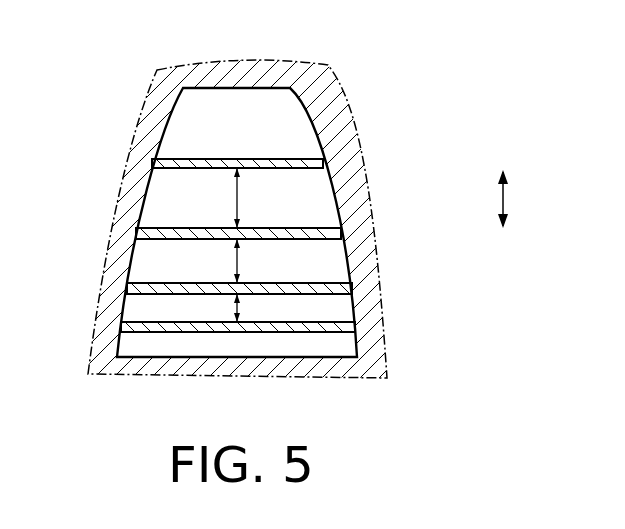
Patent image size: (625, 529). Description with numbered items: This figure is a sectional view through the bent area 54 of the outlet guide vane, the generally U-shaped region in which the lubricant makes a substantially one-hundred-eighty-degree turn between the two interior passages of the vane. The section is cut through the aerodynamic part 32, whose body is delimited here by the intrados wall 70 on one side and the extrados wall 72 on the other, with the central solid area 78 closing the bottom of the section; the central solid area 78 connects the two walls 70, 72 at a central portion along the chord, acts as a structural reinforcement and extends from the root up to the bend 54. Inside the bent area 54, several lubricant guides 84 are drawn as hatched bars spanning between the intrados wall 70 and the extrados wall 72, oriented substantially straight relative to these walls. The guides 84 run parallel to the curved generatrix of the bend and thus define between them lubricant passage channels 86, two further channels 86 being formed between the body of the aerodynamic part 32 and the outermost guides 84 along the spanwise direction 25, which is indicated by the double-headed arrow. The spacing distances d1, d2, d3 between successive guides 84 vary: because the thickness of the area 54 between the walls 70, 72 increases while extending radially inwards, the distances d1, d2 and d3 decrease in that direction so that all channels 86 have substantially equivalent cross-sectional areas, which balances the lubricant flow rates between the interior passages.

The aerodynamic part 32 is at (165, 63).
The bent area 54 is at (267, 102).
The intrados wall 70 is at (117, 237).
The extrados wall 72 is at (357, 265).
The central solid area 78 is at (248, 377).
The lubricant guide 84 is at (287, 227).
The lubricant passage channel 86 is at (180, 212).
The spacing distance d1 is at (237, 193).
The spacing distance d2 is at (237, 262).
The spacing distance d3 is at (237, 307).
The spanwise direction 25 is at (506, 194).